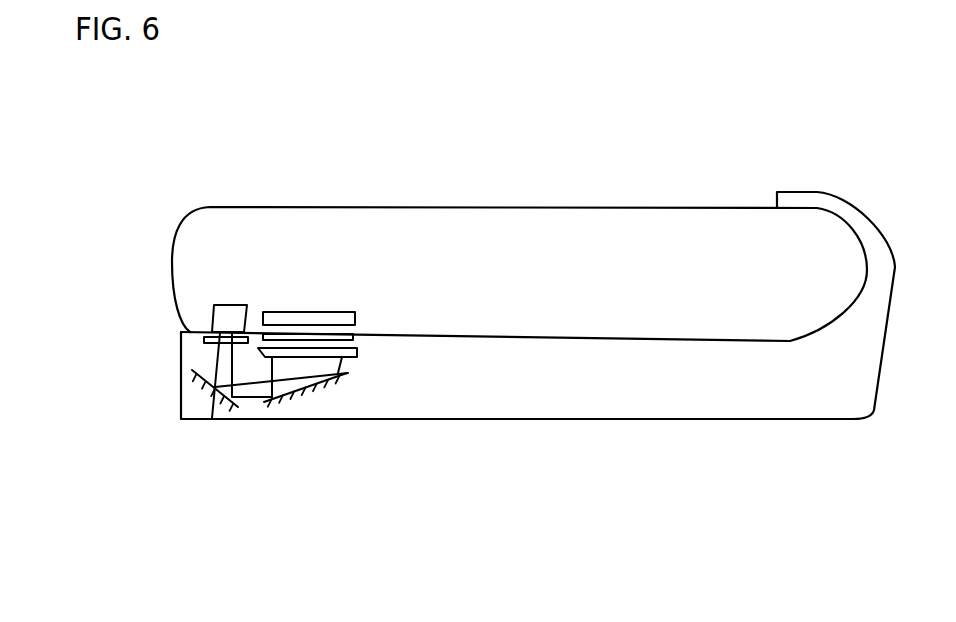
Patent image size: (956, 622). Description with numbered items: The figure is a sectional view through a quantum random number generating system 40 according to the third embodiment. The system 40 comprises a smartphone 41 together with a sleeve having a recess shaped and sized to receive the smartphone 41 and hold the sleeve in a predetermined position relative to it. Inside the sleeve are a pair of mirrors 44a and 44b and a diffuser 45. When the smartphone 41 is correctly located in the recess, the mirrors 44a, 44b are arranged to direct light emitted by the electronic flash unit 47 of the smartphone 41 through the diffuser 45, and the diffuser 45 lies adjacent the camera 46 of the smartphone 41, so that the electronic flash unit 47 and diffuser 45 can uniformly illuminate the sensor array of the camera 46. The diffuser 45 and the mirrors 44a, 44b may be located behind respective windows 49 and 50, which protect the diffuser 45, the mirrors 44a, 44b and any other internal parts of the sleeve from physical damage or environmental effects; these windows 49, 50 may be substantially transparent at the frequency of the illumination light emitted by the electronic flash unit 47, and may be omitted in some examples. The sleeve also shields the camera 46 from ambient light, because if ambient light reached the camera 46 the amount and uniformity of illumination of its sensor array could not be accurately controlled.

The quantum random number generating system 40 is at (473, 323).
The smartphone 41 is at (593, 245).
The mirror 44a is at (214, 405).
The mirror 44b is at (305, 393).
The diffuser 45 is at (357, 350).
The camera 46 is at (317, 310).
The electronic flash unit 47 is at (228, 315).
The window 49 is at (205, 345).
The window 50 is at (353, 340).